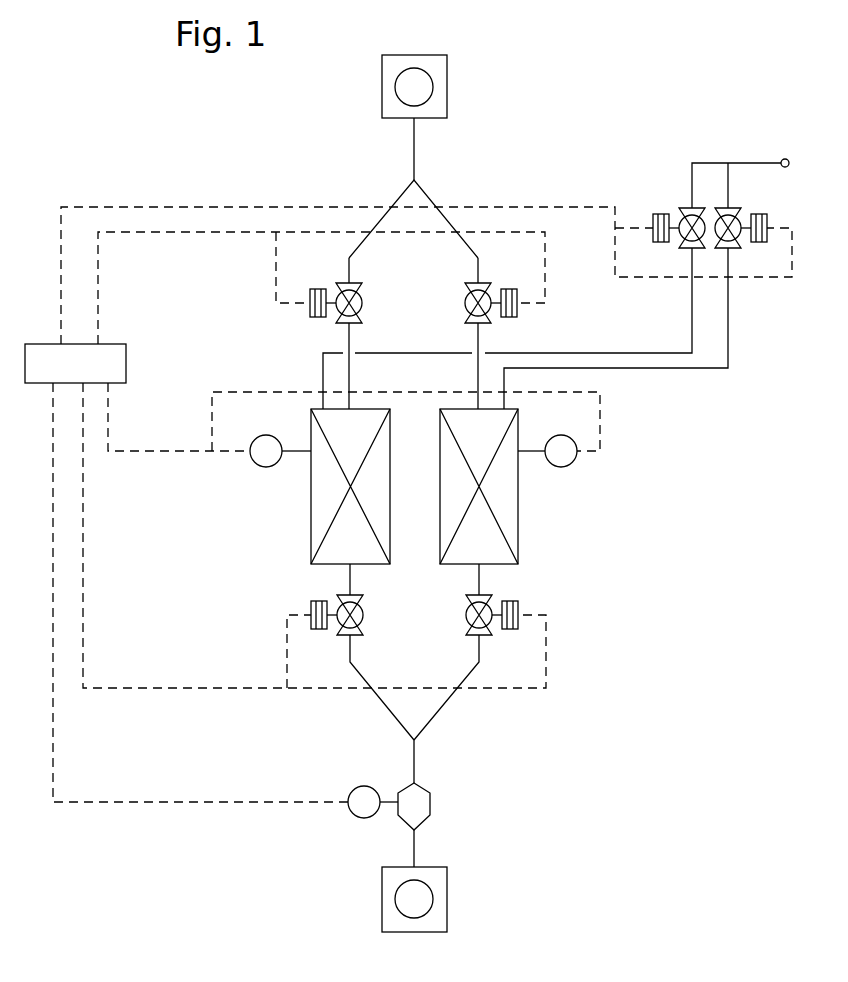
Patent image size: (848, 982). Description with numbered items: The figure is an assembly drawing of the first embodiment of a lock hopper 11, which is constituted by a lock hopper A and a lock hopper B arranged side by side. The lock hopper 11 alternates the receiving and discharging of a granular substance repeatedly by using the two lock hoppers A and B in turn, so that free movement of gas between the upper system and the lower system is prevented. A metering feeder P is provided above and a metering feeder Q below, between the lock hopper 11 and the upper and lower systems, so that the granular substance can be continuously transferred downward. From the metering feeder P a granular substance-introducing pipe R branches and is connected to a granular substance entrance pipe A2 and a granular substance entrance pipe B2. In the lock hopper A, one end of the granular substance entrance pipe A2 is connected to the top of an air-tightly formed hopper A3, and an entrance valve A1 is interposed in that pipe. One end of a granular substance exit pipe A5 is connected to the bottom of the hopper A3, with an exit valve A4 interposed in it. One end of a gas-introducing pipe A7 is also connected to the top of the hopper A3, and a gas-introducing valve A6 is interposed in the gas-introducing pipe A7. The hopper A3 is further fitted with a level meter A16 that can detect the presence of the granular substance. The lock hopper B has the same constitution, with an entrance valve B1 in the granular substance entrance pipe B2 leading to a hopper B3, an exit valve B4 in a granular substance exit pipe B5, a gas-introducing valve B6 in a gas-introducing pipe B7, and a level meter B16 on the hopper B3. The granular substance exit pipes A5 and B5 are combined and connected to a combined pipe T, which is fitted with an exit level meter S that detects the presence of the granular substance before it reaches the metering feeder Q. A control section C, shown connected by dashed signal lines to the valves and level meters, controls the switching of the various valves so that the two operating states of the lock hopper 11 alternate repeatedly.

The lock hopper 11 is at (221, 145).
The metering feeder P is at (450, 87).
The granular substance-introducing pipe R is at (416, 155).
The entrance valve A1 is at (343, 312).
The entrance valve B1 is at (485, 310).
The granular substance entrance pipe A2 is at (350, 385).
The granular substance entrance pipe B2 is at (478, 385).
The hopper A3 is at (310, 515).
The hopper B3 is at (520, 505).
The exit valve A4 is at (355, 637).
The exit valve B4 is at (475, 637).
The granular substance exit pipe A5 is at (378, 695).
The granular substance exit pipe B5 is at (450, 695).
The gas-introducing valve A6 is at (682, 214).
The gas-introducing valve B6 is at (740, 214).
The gas-introducing pipe A7 is at (692, 334).
The gas-introducing pipe B7 is at (728, 336).
The level meter A16 is at (257, 466).
The level meter B16 is at (567, 466).
The lock hopper A is at (245, 606).
The lock hopper B is at (610, 613).
The control section C is at (408, 504).
The exit level meter S is at (355, 820).
The combined pipe T is at (416, 755).
The metering feeder Q is at (448, 898).